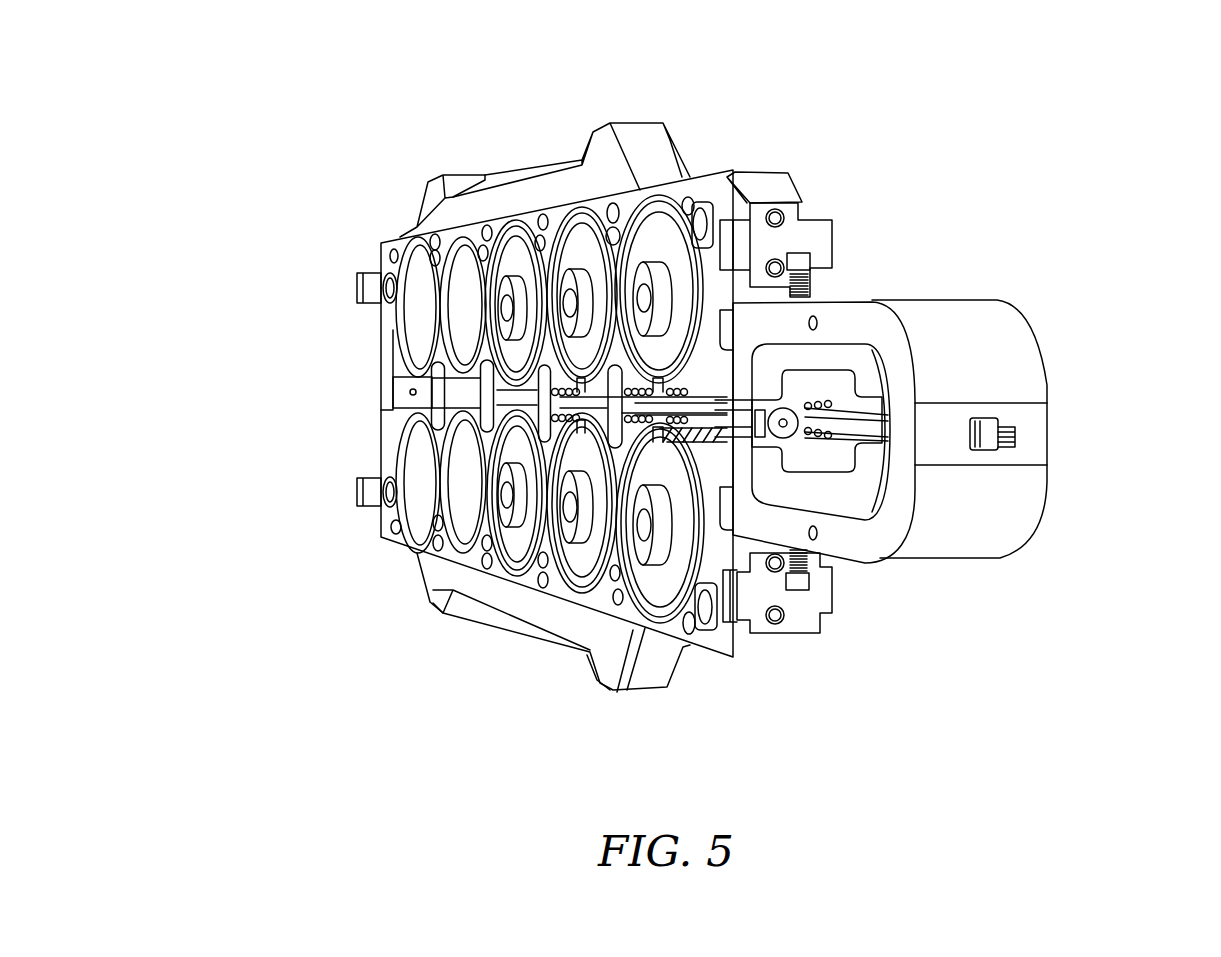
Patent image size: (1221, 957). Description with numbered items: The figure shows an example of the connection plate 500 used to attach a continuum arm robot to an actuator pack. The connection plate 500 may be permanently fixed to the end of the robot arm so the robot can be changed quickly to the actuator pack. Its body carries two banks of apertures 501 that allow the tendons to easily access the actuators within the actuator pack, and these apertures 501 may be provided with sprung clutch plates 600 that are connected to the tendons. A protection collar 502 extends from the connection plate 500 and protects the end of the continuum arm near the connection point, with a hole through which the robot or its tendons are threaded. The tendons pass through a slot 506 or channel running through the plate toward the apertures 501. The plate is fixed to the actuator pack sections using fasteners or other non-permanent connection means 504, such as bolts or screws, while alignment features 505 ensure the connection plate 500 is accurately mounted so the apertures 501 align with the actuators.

The connection plate 500 is at (228, 134).
The apertures 501 is at (404, 330).
The protection collar 502 is at (1020, 368).
The non-permanent connection means 504 is at (800, 603).
The alignment features 505 is at (688, 182).
The slot 506 is at (826, 392).
The sprung clutch plates 600 is at (585, 540).